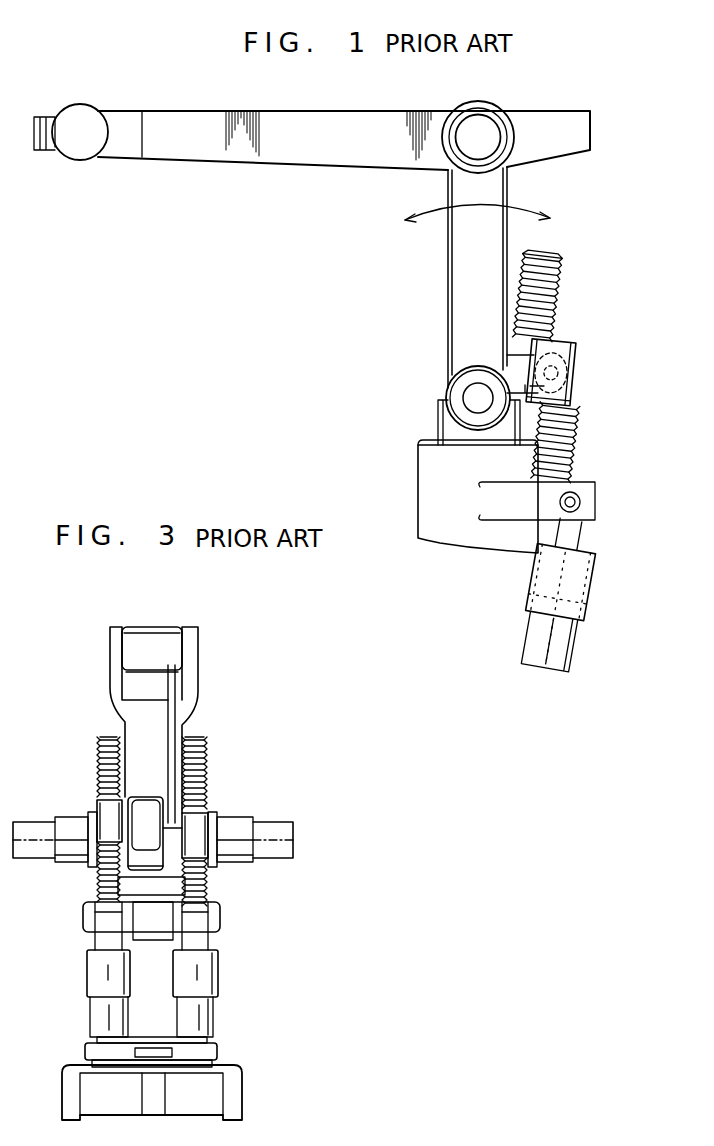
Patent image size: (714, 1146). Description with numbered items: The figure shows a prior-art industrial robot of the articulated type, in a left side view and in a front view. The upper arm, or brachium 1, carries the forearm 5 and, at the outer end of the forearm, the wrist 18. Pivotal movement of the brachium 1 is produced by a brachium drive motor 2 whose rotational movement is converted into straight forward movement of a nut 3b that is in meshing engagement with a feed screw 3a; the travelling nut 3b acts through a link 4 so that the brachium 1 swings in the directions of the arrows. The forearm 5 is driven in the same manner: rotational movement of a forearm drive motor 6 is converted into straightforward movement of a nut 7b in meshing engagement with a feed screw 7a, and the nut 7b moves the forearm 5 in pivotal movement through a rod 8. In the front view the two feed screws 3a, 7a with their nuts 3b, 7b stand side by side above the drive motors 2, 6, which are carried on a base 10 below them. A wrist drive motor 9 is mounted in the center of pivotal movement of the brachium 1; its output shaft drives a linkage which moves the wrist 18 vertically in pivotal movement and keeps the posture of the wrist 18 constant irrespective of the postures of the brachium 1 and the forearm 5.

In FIG. 1, the brachium 1 is at (458, 277).
In FIG. 3, the brachium 1 is at (120, 708).
In FIG. 1, the brachium drive motor 2 is at (606, 573).
In FIG. 3, the brachium drive motor 2 is at (92, 972).
In FIG. 1, the feed screw 3a is at (565, 304).
In FIG. 3, the feed screw 3a is at (97, 766).
In FIG. 1, the nut 3b is at (565, 352).
In FIG. 3, the nut 3b is at (105, 808).
In FIG. 1, the link 4 is at (560, 386).
In FIG. 1, the forearm 5 is at (193, 153).
In FIG. 3, the forearm 5 is at (156, 642).
In FIG. 3, the forearm drive motor 6 is at (214, 972).
In FIG. 3, the feed screw 7a is at (206, 764).
In FIG. 3, the nut 7b is at (198, 822).
In FIG. 3, the rod 8 is at (176, 711).
In FIG. 3, the wrist drive motor 9 is at (66, 858).
In FIG. 3, the base 10 is at (162, 1017).
In FIG. 1, the wrist 18 is at (52, 120).